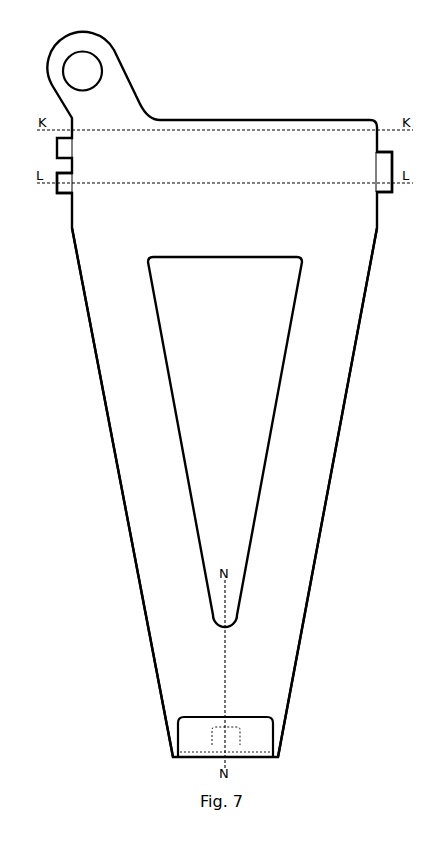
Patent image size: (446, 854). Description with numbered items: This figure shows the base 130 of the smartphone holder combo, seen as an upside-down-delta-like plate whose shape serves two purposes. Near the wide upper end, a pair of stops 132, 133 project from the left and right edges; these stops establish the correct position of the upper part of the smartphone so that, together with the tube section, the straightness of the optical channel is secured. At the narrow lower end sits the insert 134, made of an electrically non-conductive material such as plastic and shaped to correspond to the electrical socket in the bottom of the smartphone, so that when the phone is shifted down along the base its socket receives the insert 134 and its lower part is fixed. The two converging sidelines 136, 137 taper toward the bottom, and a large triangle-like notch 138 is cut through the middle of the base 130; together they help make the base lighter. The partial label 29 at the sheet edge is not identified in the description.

The blade/arm body 130 is at (152, 447).
The left notch 132 is at (78, 169).
The right notch 133 is at (370, 177).
The bottom foot / boot 134 is at (231, 723).
The left tapered edge 136 is at (88, 321).
The right tapered edge 137 is at (340, 433).
The central tapered cutout 138 is at (223, 353).
The reference element (sheet edge label) 29 is at (11, 502).